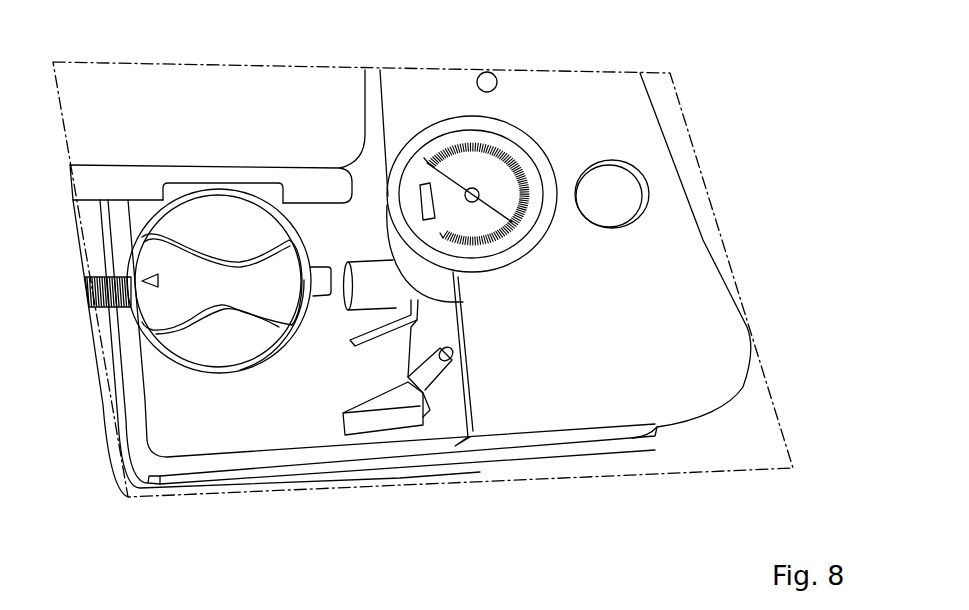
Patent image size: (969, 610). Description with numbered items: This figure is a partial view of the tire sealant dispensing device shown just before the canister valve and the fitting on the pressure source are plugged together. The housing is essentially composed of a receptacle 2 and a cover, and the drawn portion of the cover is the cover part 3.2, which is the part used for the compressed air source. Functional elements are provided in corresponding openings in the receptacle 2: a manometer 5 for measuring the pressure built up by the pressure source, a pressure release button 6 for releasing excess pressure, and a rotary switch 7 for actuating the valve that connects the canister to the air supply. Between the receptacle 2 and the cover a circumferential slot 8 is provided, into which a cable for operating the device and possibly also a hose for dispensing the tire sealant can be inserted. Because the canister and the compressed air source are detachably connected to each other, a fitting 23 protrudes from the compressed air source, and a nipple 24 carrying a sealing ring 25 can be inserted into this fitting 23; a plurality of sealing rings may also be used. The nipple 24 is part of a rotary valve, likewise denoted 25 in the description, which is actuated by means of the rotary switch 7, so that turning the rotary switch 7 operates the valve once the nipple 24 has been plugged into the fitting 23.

The receptacle 2 is at (590, 455).
The cover part 3.2 is at (670, 246).
The manometer 5 is at (518, 160).
The pressure release button 6 is at (627, 192).
The rotary switch 7 is at (267, 225).
The circumferential slot 8 is at (595, 435).
The fitting 23 is at (387, 298).
The nipple 24 is at (325, 290).
The sealing ring 25 is at (257, 188).